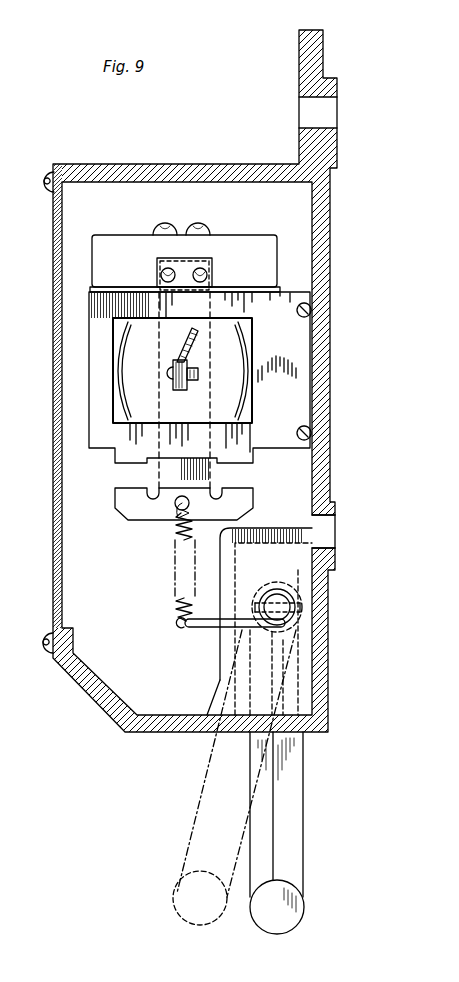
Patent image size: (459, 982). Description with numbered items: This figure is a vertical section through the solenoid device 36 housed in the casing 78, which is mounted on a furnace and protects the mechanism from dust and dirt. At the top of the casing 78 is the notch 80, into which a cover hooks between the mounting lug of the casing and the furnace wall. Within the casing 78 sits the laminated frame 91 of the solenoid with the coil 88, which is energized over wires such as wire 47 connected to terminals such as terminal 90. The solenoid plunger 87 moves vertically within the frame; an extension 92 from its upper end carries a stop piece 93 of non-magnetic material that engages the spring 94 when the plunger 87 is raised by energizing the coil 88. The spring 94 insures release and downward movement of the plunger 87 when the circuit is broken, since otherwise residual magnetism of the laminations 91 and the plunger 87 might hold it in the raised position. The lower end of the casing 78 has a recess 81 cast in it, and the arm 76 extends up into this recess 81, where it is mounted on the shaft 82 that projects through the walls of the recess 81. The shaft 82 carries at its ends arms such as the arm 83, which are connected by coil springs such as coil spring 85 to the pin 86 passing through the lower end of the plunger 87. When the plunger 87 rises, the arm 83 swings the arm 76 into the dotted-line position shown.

The solenoid device 36 is at (52, 245).
The wire 47 is at (178, 338).
The arm 76 is at (202, 797).
The casing 78 is at (157, 170).
The notch 80 is at (323, 50).
The recess 81 is at (283, 556).
The shaft 82 is at (281, 612).
The arm 83 is at (203, 627).
The coil spring 85 is at (180, 604).
The pin 86 is at (178, 510).
The solenoid plunger 87 is at (165, 474).
The coil 88 is at (230, 345).
The terminal 90 is at (173, 382).
The laminated frame 91 is at (97, 395).
The extension 92 is at (158, 280).
The stop piece 93 is at (214, 262).
The spring 94 is at (186, 230).